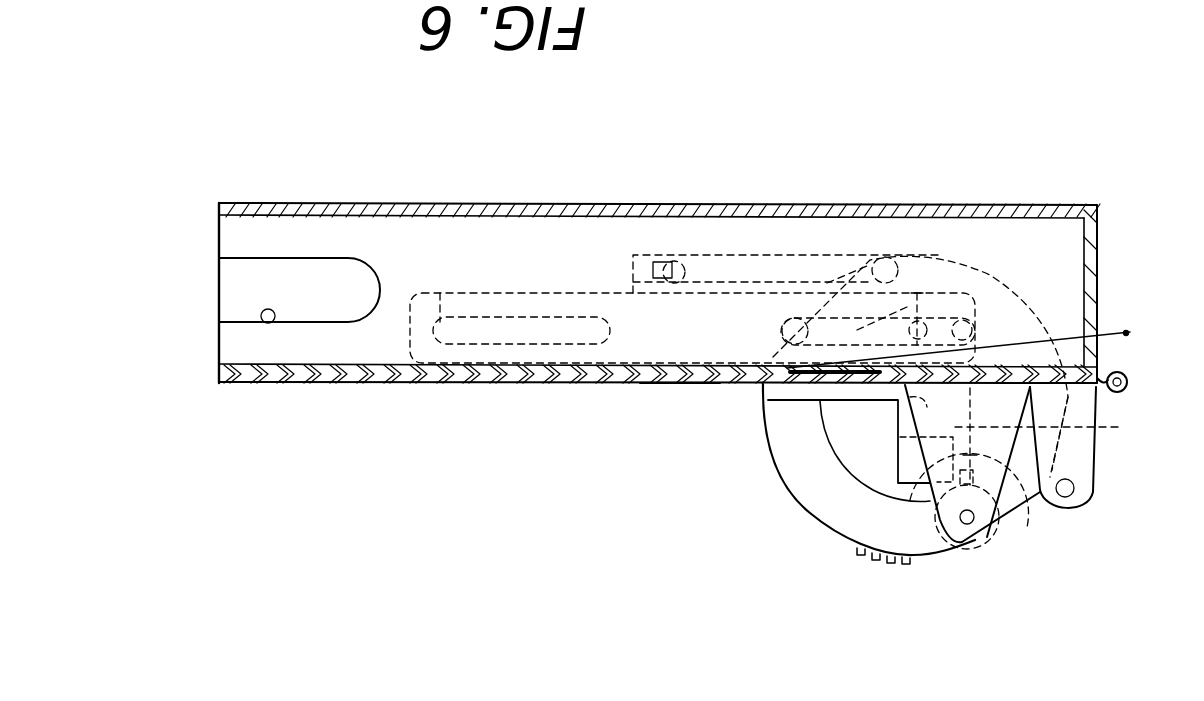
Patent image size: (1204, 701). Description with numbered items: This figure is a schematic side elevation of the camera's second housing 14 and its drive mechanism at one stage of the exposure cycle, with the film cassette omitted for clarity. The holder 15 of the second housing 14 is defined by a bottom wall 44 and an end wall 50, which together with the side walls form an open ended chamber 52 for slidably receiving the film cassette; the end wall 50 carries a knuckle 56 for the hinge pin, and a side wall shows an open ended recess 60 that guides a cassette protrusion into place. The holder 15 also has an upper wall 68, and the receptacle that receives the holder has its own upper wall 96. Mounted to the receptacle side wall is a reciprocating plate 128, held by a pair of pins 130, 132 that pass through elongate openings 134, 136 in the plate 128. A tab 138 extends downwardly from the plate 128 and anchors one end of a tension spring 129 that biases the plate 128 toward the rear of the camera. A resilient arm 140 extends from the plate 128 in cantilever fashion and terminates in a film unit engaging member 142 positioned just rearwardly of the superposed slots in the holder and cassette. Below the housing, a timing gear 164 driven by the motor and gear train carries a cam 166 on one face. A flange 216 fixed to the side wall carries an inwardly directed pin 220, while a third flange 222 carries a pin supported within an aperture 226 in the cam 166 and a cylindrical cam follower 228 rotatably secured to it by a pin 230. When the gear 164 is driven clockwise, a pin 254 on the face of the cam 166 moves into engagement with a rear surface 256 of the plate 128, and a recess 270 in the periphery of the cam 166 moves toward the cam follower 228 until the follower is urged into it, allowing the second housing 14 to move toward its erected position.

The second housing 14 is at (745, 166).
The holder 15 is at (384, 326).
The bottom wall 44 is at (884, 205).
The end wall 50 is at (1097, 258).
The open ended chamber 52 is at (187, 292).
The knuckle 56 is at (1130, 390).
The open ended recess 60 is at (266, 324).
The upper wall 68 is at (678, 384).
The upper wall 96 is at (593, 384).
The plate 128 is at (895, 466).
The tension spring 129 is at (786, 256).
The pin 130 is at (778, 320).
The pin 132 is at (441, 293).
The elongate opening 134 is at (975, 323).
The elongate opening 136 is at (545, 350).
The tab 138 is at (633, 255).
The resilient arm 140 is at (1103, 345).
The film unit engaging member 142 is at (1130, 332).
The timing gear 164 is at (812, 520).
The cam 166 is at (845, 474).
The flange 216 is at (1094, 462).
The pin 220 is at (1071, 493).
The third flange 222 is at (940, 535).
The aperture 226 is at (898, 424).
The cam follower 228 is at (947, 556).
The pin 230 is at (971, 524).
The pin 254 is at (917, 298).
The rear surface 256 is at (1025, 527).
The recess 270 is at (1055, 432).